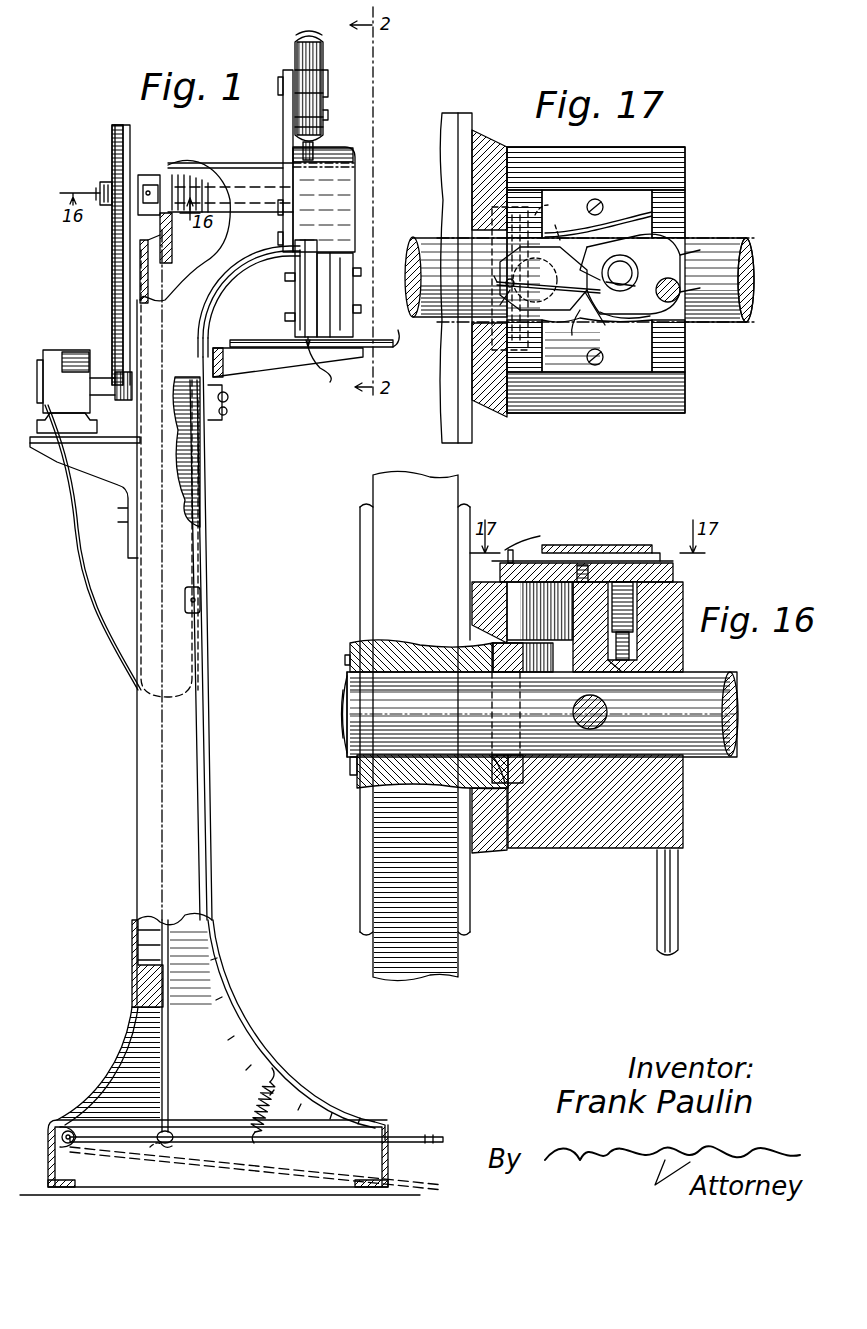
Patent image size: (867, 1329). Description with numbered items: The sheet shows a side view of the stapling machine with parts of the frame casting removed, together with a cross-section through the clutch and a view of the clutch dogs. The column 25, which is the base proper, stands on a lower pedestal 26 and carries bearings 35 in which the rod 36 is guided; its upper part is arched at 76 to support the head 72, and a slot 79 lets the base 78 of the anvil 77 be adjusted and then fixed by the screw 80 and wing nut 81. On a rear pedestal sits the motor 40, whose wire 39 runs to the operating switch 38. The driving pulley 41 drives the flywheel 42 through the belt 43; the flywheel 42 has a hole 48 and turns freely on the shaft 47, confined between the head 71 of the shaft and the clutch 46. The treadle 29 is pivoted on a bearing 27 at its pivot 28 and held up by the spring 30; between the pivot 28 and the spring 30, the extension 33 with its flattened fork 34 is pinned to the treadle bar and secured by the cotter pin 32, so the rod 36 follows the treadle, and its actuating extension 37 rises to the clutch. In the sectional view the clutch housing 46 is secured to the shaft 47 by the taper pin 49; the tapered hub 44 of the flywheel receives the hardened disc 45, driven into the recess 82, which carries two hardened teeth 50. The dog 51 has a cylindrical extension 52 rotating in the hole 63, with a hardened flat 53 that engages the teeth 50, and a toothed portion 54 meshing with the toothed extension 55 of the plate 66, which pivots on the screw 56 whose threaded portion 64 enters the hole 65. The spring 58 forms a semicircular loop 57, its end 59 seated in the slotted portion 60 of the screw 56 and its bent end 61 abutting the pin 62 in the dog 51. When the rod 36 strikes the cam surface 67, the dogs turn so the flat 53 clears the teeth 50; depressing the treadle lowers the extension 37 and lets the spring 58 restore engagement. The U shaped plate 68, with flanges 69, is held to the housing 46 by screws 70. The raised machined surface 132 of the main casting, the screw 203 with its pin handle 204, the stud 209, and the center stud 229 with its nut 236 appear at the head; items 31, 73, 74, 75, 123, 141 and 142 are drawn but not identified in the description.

In FIG. 1, the column 25 is at (212, 860).
In FIG. 1, the lower pedestal 26 is at (48, 1142).
In FIG. 1, the bearing 27 is at (70, 1148).
In FIG. 1, the pivot 28 is at (70, 1130).
In FIG. 1, the treadle 29 is at (425, 1136).
In FIG. 1, the spring 30 is at (260, 1094).
In FIG. 1, the lever 31 is at (170, 1146).
In FIG. 1, the cotter pin 32 is at (170, 1132).
In FIG. 1, the rod extension 33 is at (162, 1090).
In FIG. 1, the fork 34 is at (158, 1148).
In FIG. 1, the bearings 35 is at (180, 1000).
In FIG. 1, the rod 36 is at (132, 975).
In FIG. 1, the actuating extension 37 is at (160, 222).
In FIG. 17, the actuating extension 37 is at (680, 290).
In FIG. 16, the actuating extension 37 is at (657, 897).
In FIG. 1, the operating switch 38 is at (200, 598).
In FIG. 1, the wire 39 is at (77, 533).
In FIG. 1, the motor 40 is at (60, 352).
In FIG. 1, the driving pulley 41 is at (132, 380).
In FIG. 1, the flywheel 42 is at (112, 255).
In FIG. 17, the flywheel 42 is at (472, 432).
In FIG. 16, the flywheel 42 is at (373, 538).
In FIG. 1, the belt 43 is at (115, 306).
In FIG. 17, the belt 43 is at (458, 376).
In FIG. 16, the belt 43 is at (425, 476).
In FIG. 17, the tapered hub 44 is at (485, 150).
In FIG. 17, the hardened disc 45 is at (492, 212).
In FIG. 16, the hardened disc 45 is at (505, 790).
In FIG. 17, the clutch housing 46 is at (685, 380).
In FIG. 16, the clutch housing 46 is at (620, 830).
In FIG. 1, the shaft 47 is at (203, 185).
In FIG. 17, the shaft 47 is at (413, 238).
In FIG. 16, the shaft 47 is at (745, 706).
In FIG. 16, the hole 48 is at (420, 655).
In FIG. 16, the taper pin 49 is at (609, 715).
In FIG. 17, the teeth 50 is at (551, 212).
In FIG. 16, the teeth 50 is at (520, 790).
In FIG. 17, the clutch dog 51 is at (587, 330).
In FIG. 16, the clutch dog 51 is at (500, 574).
In FIG. 17, the cylindrical extension 52 is at (571, 226).
In FIG. 16, the cylindrical extension 52 is at (540, 600).
In FIG. 17, the flat portion 53 is at (543, 278).
In FIG. 16, the flat portion 53 is at (520, 660).
In FIG. 17, the toothed portion 54 is at (606, 328).
In FIG. 16, the toothed portion 54 is at (583, 565).
In FIG. 17, the toothed extension 55 is at (597, 258).
In FIG. 17, the screw 56 is at (660, 245).
In FIG. 17, the semicircular loop 57 is at (625, 258).
In FIG. 17, the spring member 58 is at (630, 275).
In FIG. 17, the spring end 59 is at (640, 262).
In FIG. 17, the slotted portion 60 is at (641, 310).
In FIG. 17, the bent end 61 is at (502, 300).
In FIG. 16, the bent end 61 is at (492, 561).
In FIG. 17, the pin 62 is at (510, 280).
In FIG. 16, the pin 62 is at (533, 532).
In FIG. 16, the hole 63 is at (598, 672).
In FIG. 16, the threaded portion 64 is at (683, 596).
In FIG. 16, the threaded hole 65 is at (630, 660).
In FIG. 17, the plate 66 is at (598, 216).
In FIG. 1, the cam surface 67 is at (170, 225).
In FIG. 17, the cam surface 67 is at (690, 250).
In FIG. 16, the cam surface 67 is at (668, 560).
In FIG. 16, the U shaped plate 68 is at (612, 545).
In FIG. 1, the flanges 69 is at (152, 185).
In FIG. 17, the flanges 69 is at (575, 190).
In FIG. 1, the screws 70 is at (148, 190).
In FIG. 17, the screws 70 is at (598, 200).
In FIG. 1, the shaft head 71 is at (100, 190).
In FIG. 16, the shaft head 71 is at (342, 705).
In FIG. 1, the head 72 is at (355, 175).
In FIG. 1, the pulley 73 is at (323, 48).
In FIG. 1, the belt 74 is at (296, 35).
In FIG. 1, the bracket 75 is at (283, 127).
In FIG. 1, the arch 76 is at (228, 255).
In FIG. 1, the anvil 77 is at (285, 375).
In FIG. 1, the anvil base 78 is at (215, 438).
In FIG. 1, the slot 79 is at (200, 475).
In FIG. 1, the screw 80 is at (228, 398).
In FIG. 1, the wing nut 81 is at (228, 418).
In FIG. 16, the recess 82 is at (485, 845).
In FIG. 1, the bracket 123 is at (335, 285).
In FIG. 1, the raised machined surface 132 is at (296, 298).
In FIG. 1, the plate 141 is at (392, 336).
In FIG. 1, the needle 142 is at (331, 368).
In FIG. 1, the screw 203 is at (285, 315).
In FIG. 1, the pin handle 204 is at (305, 328).
In FIG. 1, the stud 209 is at (350, 322).
In FIG. 1, the center stud 229 is at (355, 279).
In FIG. 1, the nut 236 is at (285, 277).